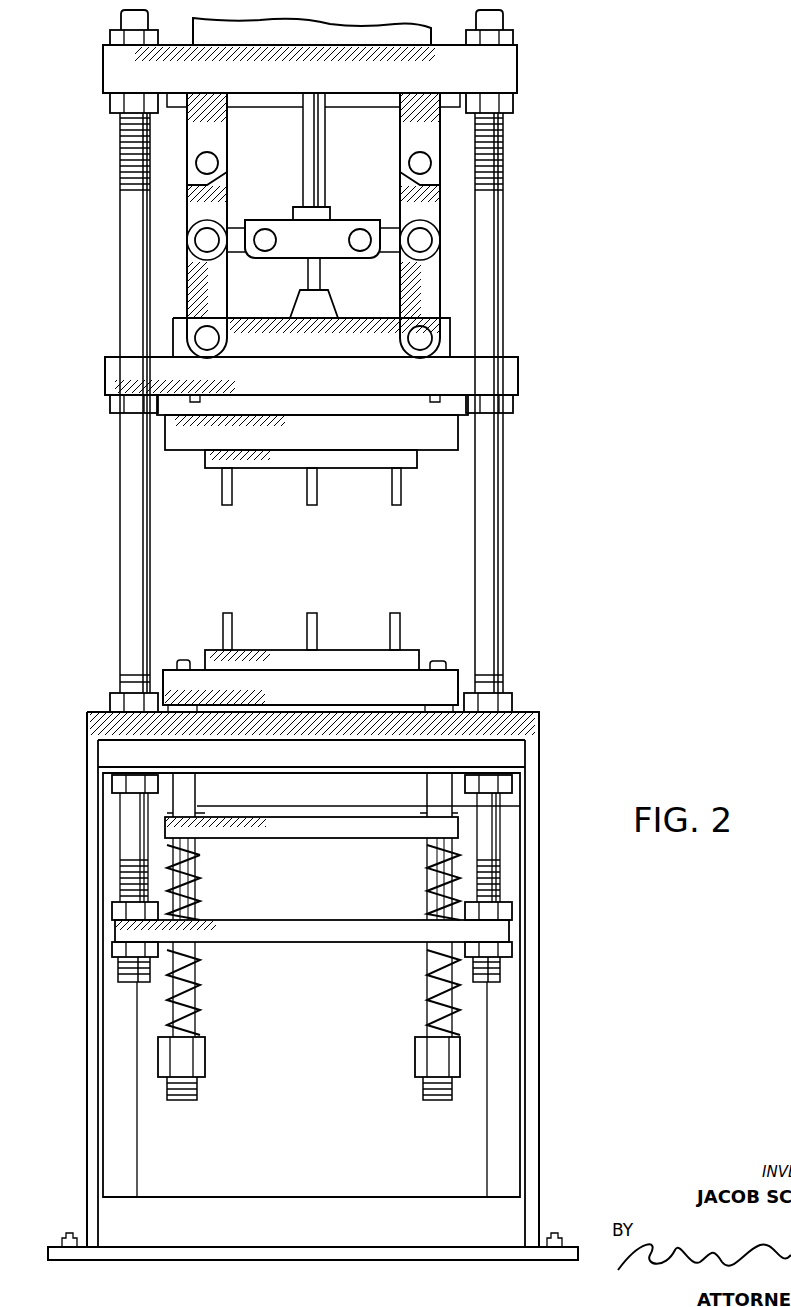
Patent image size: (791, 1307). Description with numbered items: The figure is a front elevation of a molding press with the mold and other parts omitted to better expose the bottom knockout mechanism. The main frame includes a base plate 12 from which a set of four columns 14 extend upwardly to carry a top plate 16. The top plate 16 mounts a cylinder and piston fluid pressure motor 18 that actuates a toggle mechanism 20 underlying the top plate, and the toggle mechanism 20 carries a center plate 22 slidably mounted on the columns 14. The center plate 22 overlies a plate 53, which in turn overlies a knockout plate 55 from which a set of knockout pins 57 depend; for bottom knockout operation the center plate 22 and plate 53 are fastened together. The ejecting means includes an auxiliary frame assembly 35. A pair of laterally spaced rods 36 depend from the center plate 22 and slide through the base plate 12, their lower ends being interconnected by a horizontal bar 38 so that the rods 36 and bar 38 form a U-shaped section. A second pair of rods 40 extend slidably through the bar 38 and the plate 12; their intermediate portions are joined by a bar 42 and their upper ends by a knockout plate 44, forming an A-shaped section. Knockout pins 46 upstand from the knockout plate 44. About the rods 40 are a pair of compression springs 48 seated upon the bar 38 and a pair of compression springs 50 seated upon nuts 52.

The base plate 12 is at (525, 737).
The columns 14 is at (145, 483).
The top plate 16 is at (511, 75).
The cylinder and piston fluid pressure motor 18 is at (425, 28).
The toggle mechanism 20 is at (433, 285).
The center plate 22 is at (515, 372).
The auxiliary frame assembly 35 is at (312, 832).
The rods or frame members 36 is at (125, 881).
The bar or cross member 38 is at (240, 932).
The rods or frame members 40 is at (200, 873).
The bar or cross member 42 is at (256, 830).
The knockout plate 44 is at (450, 688).
The knockout pins 46 is at (313, 628).
The compression springs 48 is at (200, 907).
The compression springs 50 is at (200, 1010).
The nuts 52 is at (200, 1062).
The plate 53 is at (316, 406).
The knockout plate 55 is at (193, 440).
The knockout pins 57 is at (318, 494).